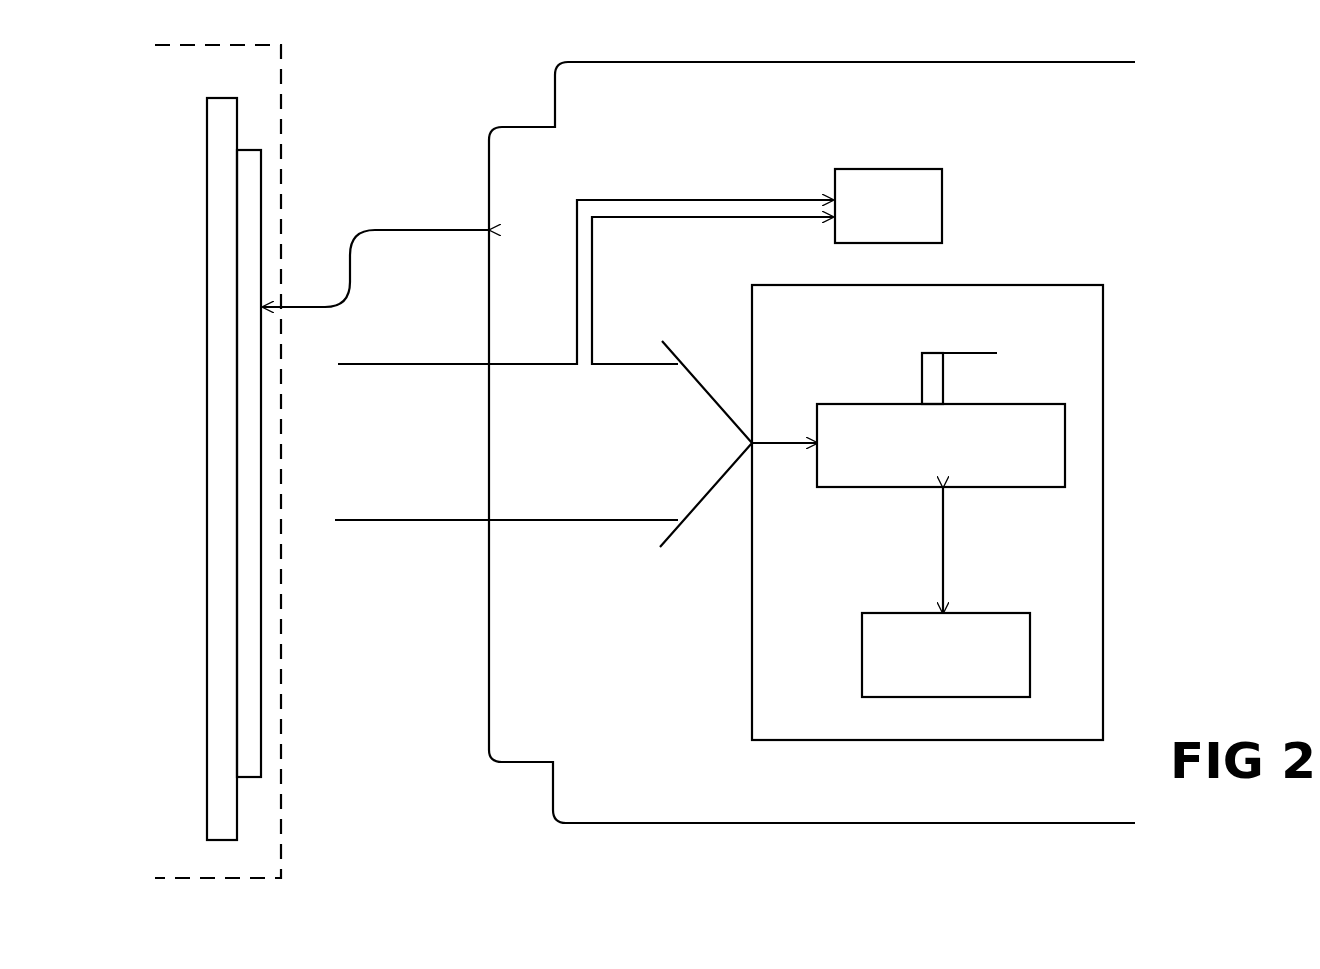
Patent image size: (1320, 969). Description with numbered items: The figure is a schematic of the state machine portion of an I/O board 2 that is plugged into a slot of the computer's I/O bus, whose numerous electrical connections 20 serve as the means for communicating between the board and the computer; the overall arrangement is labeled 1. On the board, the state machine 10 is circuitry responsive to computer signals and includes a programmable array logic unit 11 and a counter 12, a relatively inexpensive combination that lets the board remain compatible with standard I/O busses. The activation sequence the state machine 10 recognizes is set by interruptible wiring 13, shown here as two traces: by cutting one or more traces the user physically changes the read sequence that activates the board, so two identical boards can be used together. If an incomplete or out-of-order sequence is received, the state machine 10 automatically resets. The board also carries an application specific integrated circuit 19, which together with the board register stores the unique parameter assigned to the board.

The computer system 1 is at (435, 460).
The I/O board 2 is at (893, 823).
The state machine 10 is at (905, 742).
The programmable array logic unit (PAL) 11 is at (1065, 441).
The counter 12 is at (893, 613).
The interruptible wiring 13 is at (922, 378).
The Application Specific Integrated Circuit (ASIC) 19 is at (942, 196).
The electrical connections 20 is at (262, 190).